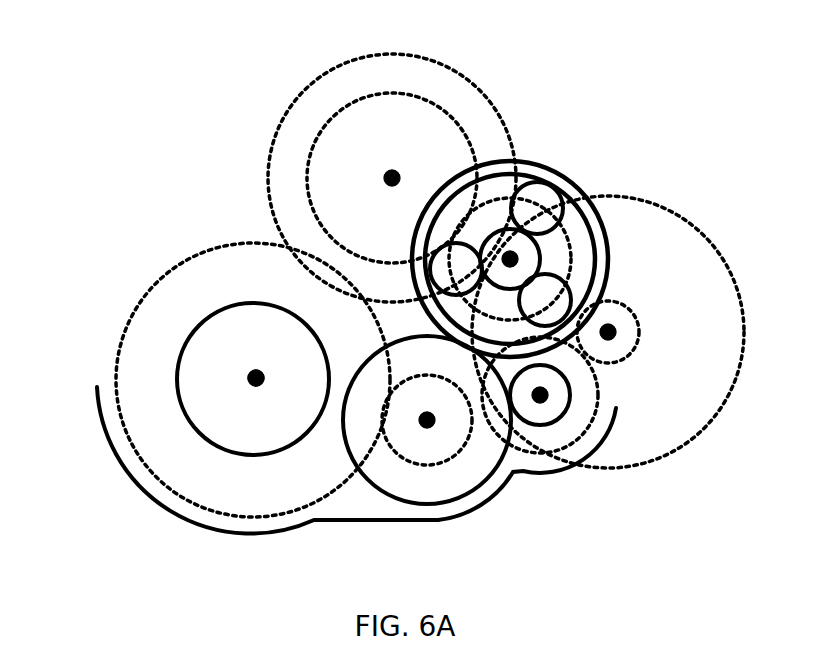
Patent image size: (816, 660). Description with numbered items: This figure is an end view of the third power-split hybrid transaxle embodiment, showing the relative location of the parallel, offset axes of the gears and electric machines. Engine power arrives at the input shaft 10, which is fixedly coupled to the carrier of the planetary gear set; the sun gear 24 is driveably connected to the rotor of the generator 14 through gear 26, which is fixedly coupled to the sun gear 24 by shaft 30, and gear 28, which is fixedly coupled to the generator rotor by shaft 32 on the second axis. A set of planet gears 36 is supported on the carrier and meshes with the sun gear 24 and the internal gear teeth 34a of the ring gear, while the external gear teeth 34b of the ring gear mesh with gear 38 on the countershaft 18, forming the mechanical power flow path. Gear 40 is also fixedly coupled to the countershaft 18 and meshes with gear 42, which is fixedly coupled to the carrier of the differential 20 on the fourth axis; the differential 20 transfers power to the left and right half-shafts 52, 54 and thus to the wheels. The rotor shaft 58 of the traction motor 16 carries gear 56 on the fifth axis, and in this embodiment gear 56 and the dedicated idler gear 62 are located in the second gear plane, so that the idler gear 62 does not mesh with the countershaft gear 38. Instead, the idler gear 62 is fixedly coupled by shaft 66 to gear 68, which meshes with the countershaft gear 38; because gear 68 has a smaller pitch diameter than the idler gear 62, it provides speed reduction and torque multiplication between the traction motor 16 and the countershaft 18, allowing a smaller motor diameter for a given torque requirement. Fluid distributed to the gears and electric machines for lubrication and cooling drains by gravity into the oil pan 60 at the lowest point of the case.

The input shaft 10 is at (510, 255).
The generator 14 is at (278, 127).
The traction motor 16 is at (693, 437).
The countershaft 18 is at (427, 422).
The differential 20 is at (230, 305).
The sun gear 24 is at (540, 255).
The gear 26 is at (480, 203).
The gear 28 is at (360, 97).
The shaft 30 is at (510, 255).
The shaft 32 is at (383, 175).
The internal gear teeth of ring gear 34a is at (493, 165).
The external gear teeth of ring gear 34b is at (548, 200).
The planet gears 36 is at (597, 297).
The gear 38 is at (380, 492).
The gear 40 is at (442, 465).
The gear 42 is at (140, 300).
The left half-shaft 52 is at (255, 388).
The right half-shaft 54 is at (255, 388).
The gear 56 is at (633, 320).
The rotor shaft 58 is at (618, 332).
The oil pan 60 is at (127, 477).
The idler gear 62 is at (530, 450).
The shaft 66 is at (543, 398).
The gear 68 is at (601, 393).